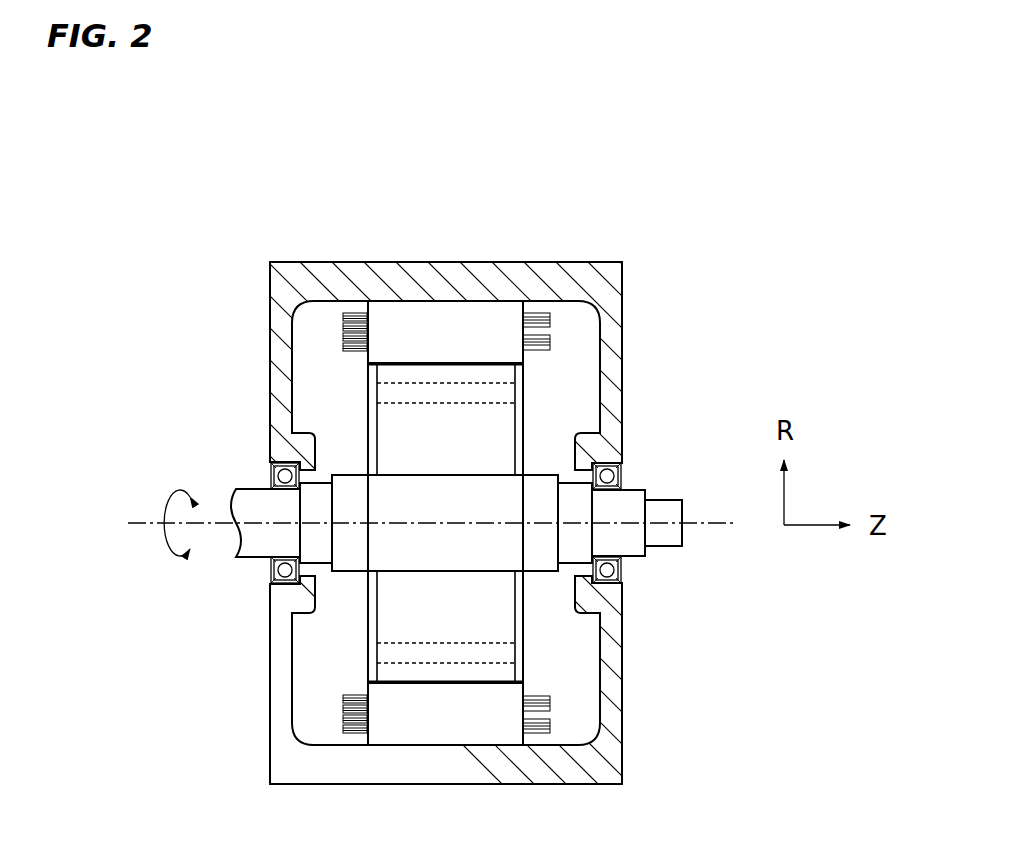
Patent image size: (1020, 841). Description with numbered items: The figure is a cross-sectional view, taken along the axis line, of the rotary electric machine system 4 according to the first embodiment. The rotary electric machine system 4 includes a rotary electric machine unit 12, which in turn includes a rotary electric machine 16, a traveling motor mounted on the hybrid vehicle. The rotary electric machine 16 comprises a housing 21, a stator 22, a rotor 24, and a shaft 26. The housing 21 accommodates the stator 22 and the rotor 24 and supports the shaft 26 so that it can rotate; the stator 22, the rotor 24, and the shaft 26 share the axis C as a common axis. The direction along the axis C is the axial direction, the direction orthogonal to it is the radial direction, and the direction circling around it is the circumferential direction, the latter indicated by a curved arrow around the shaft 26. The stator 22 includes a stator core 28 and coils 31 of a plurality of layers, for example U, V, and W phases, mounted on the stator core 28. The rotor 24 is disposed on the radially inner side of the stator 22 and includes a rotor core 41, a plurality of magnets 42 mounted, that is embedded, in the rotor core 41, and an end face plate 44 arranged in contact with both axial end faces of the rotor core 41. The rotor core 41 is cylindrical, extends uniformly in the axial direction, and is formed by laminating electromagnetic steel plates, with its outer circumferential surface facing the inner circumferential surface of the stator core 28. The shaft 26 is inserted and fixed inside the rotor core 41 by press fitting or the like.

The rotary electric machine system 4 is at (305, 173).
The rotary electric machine unit 12 is at (266, 240).
The rotary electric machine 16 is at (266, 312).
The housing 21 is at (385, 272).
The stator 22 is at (442, 296).
The stator core 28 is at (482, 313).
The coils 31 is at (551, 320).
The rotor 24 is at (363, 411).
The rotor core 41 is at (507, 440).
The magnets 42 is at (507, 396).
The end face plate 44 is at (368, 633).
The shaft 26 is at (255, 547).
The axis C is at (135, 520).